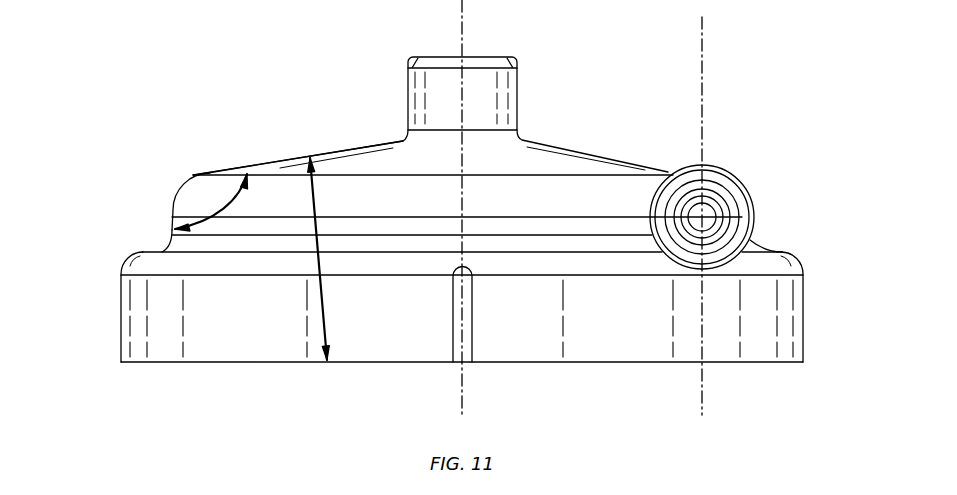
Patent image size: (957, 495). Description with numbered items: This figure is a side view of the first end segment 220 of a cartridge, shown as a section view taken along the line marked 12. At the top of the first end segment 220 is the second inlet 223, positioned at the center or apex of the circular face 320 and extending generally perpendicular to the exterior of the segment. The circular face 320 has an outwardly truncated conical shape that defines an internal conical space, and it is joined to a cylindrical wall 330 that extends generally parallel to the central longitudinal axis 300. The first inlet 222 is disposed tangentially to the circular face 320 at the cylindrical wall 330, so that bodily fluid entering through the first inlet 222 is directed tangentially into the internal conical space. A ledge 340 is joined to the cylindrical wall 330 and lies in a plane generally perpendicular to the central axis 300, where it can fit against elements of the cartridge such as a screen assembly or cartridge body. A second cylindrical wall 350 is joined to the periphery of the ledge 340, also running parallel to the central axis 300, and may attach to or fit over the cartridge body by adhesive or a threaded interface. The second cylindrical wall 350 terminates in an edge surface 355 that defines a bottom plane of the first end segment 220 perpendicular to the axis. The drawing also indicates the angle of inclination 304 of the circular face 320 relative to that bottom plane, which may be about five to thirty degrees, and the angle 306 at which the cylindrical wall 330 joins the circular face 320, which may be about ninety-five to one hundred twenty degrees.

The section line 12- 12 is at (668, 415).
The first end segment 220 is at (122, 65).
The second inlet 223 is at (518, 98).
The first inlet 222 is at (736, 177).
The circular face 320 is at (292, 157).
The cylindrical wall 330 is at (172, 228).
The ledge 340 is at (162, 251).
The angle 306 is at (232, 205).
The angle of inclination 304 is at (326, 294).
The central longitudinal axis 300 is at (466, 318).
The second cylindrical wall 350 is at (805, 313).
The edge surface 355 is at (172, 364).